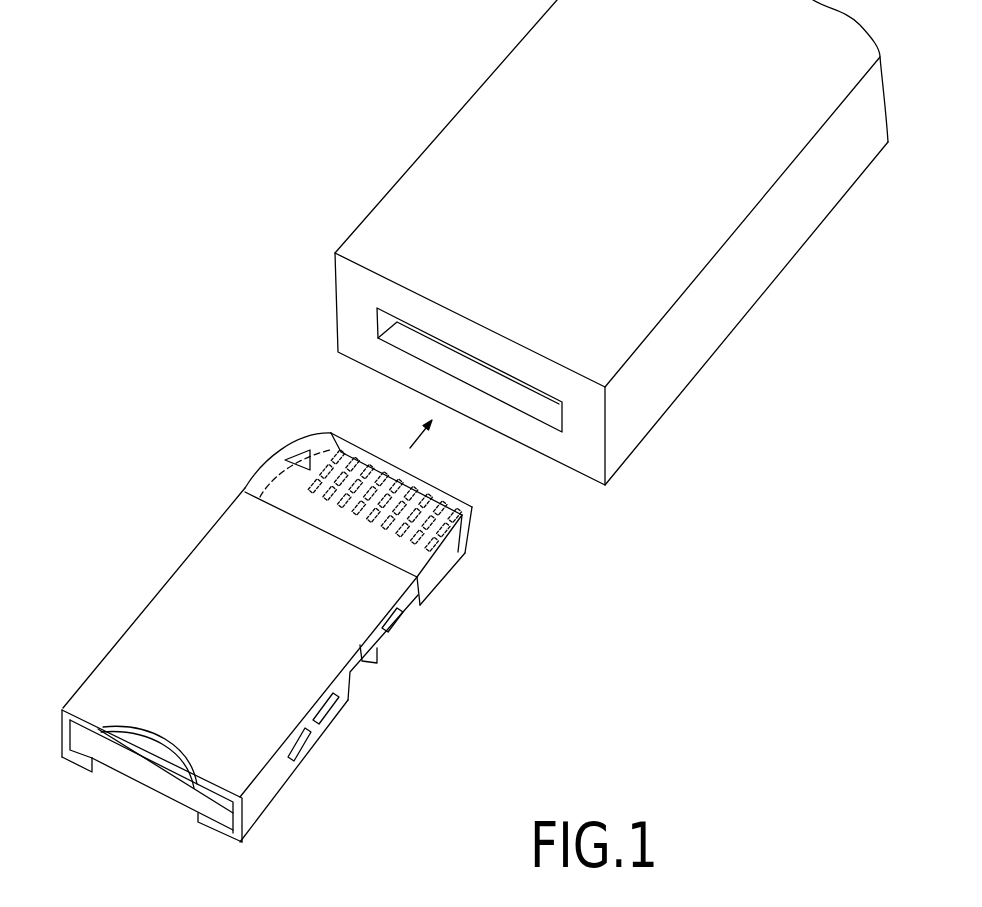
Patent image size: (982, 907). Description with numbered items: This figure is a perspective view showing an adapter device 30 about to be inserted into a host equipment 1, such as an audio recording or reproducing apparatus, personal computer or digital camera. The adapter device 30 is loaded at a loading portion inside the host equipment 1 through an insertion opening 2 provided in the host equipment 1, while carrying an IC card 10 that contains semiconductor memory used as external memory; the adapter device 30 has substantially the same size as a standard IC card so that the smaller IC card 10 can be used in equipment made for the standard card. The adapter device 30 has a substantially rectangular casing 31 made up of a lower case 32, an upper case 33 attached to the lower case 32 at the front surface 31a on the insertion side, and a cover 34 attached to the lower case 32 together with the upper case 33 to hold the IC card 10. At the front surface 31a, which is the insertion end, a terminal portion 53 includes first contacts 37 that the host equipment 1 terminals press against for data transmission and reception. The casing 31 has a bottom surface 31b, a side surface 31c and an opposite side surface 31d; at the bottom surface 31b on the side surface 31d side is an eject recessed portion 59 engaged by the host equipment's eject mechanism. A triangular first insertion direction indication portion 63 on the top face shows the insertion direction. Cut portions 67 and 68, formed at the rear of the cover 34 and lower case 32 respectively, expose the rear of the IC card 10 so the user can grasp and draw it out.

The host equipment 1 is at (482, 140).
The insertion opening 2 is at (571, 424).
The IC card 10 is at (133, 770).
The adapter device 30 is at (376, 703).
The casing 31 is at (238, 512).
The front surface 31a is at (458, 499).
The bottom surface 31b is at (297, 770).
The side surface 31c is at (172, 580).
The side surface 31d is at (350, 702).
The lower case 32 is at (438, 581).
The upper case 33 is at (273, 458).
The cover 34 is at (125, 645).
The first contacts 37 is at (338, 456).
The terminal portion 53 is at (478, 527).
The eject recessed portion 59 is at (370, 652).
The first insertion direction indication portion 63 is at (300, 444).
The cut portion 67 is at (163, 747).
The cut portion 68 is at (100, 768).